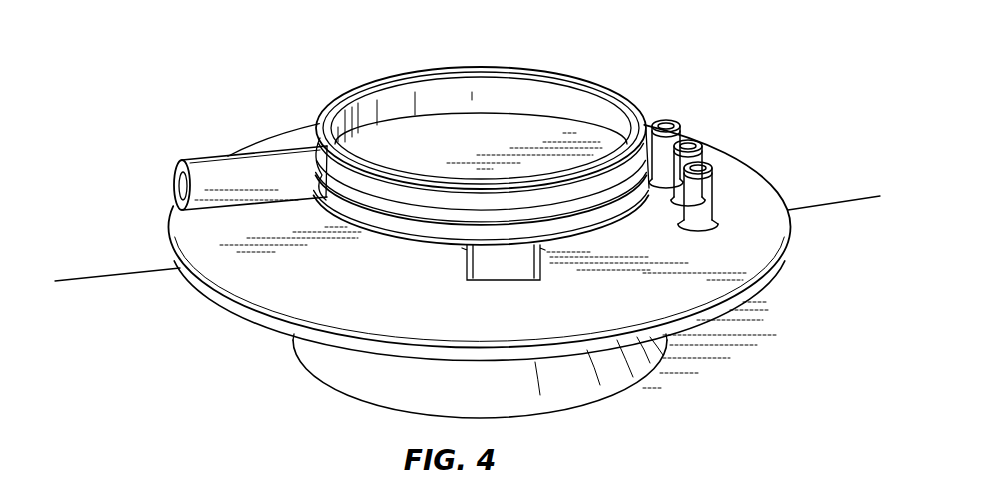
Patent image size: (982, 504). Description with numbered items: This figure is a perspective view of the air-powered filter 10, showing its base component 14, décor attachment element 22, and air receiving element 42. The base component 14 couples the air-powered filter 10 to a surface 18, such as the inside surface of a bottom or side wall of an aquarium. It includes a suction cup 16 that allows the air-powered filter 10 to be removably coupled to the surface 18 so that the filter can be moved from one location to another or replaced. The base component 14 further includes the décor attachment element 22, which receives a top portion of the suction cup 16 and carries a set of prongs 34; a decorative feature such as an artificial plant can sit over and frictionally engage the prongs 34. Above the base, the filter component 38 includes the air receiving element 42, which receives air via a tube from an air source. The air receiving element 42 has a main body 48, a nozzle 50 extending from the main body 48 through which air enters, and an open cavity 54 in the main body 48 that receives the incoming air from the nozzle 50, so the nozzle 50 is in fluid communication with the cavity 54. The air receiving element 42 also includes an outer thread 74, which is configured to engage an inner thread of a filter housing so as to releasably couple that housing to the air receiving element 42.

The air-powered filter 10 is at (275, 70).
The base component 14 is at (245, 335).
The suction cup 16 is at (617, 400).
The surface 18 is at (780, 326).
The décor attachment element 22 is at (165, 236).
The prongs 34 is at (700, 163).
The filter component 38 is at (181, 60).
The air receiving element 42 is at (203, 155).
The main body 48 is at (443, 103).
The nozzle 50 is at (262, 165).
The open cavity 54 is at (534, 135).
The outer thread 74 is at (414, 210).